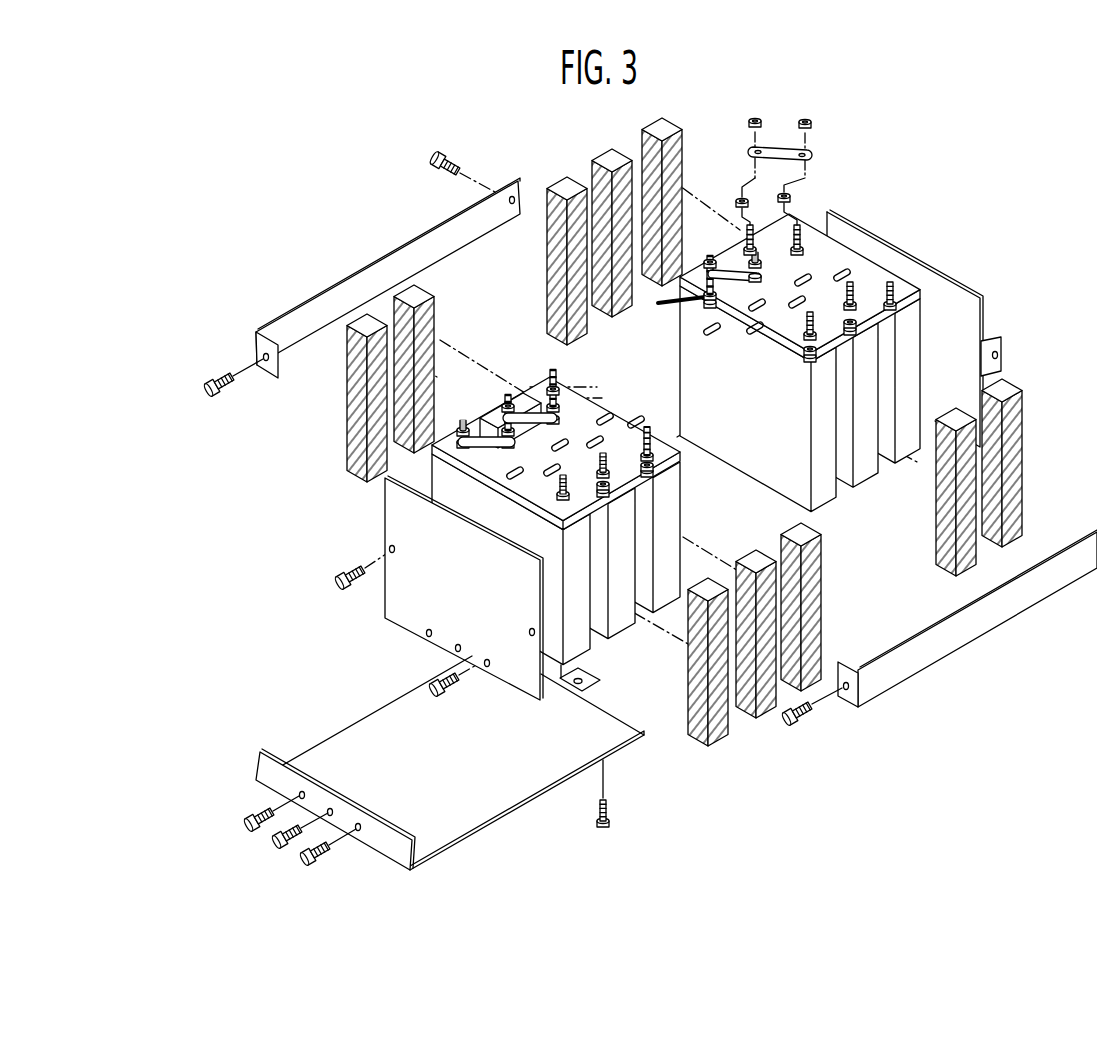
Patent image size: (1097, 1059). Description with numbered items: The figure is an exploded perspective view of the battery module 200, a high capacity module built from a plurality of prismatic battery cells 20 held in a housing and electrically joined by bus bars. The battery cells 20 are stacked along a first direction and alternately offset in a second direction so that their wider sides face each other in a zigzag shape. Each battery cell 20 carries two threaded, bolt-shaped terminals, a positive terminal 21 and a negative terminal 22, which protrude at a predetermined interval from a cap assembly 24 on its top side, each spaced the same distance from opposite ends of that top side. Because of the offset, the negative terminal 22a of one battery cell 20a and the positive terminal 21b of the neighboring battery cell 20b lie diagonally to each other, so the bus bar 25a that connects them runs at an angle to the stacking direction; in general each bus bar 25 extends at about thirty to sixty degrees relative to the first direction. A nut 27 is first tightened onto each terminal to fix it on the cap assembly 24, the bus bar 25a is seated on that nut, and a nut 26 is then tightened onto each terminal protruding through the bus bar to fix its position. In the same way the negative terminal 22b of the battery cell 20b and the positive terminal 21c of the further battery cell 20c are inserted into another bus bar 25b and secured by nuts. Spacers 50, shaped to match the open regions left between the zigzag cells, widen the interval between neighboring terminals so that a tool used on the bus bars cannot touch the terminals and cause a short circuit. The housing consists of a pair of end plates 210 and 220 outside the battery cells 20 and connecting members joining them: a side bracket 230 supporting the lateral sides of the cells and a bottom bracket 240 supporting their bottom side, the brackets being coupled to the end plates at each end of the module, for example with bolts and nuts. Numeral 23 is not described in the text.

The battery module 200 is at (272, 151).
The battery cell 20 is at (930, 376).
The battery cell 20a is at (558, 632).
The battery cell 20b is at (587, 642).
The battery cell 20c is at (620, 641).
The positive terminal 21 is at (800, 245).
The positive terminal 21b is at (500, 443).
The positive terminal 21c is at (604, 454).
The negative terminal 22 is at (893, 282).
The negative terminal 22a is at (458, 428).
The negative terminal 22b is at (607, 506).
The hole 23 is at (838, 280).
The cap assembly 24 is at (815, 262).
The bus bar 25 is at (815, 153).
The bus bar 25a is at (488, 441).
The bus bar 25b is at (612, 483).
The nut 26 is at (815, 122).
The nut 27 is at (793, 200).
The spacer 50 is at (1023, 453).
The end plate 210 is at (392, 595).
The end plate 220 is at (989, 319).
The side bracket 230 is at (262, 328).
The bottom bracket 240 is at (256, 782).